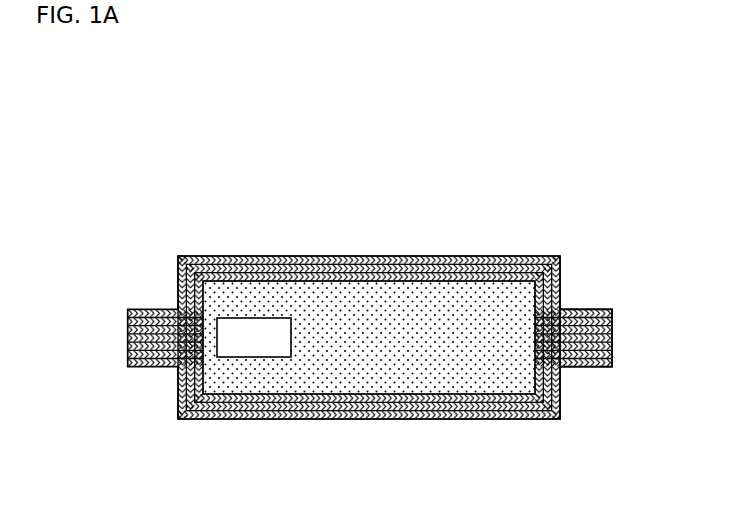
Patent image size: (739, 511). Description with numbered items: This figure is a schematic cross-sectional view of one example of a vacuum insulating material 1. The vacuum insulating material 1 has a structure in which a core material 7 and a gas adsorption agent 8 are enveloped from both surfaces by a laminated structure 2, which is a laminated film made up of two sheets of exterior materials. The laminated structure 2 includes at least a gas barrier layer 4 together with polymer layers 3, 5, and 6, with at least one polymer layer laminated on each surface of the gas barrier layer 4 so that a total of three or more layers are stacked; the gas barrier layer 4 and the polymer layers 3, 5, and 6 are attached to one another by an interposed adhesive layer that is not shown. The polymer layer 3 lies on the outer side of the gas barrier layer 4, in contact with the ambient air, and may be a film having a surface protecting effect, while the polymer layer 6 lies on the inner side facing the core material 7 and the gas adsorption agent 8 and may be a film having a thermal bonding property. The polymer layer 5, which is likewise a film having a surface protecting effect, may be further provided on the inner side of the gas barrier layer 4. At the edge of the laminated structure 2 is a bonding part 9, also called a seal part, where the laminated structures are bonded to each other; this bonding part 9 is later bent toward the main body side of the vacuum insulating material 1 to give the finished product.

The vacuum insulating material 1 is at (187, 182).
The laminated structure 2 is at (397, 204).
The polymer layer 3 is at (467, 257).
The gas barrier layer 4 is at (447, 266).
The polymer layer 5 is at (424, 274).
The polymer layer 6 is at (400, 281).
The core material 7 is at (333, 298).
The gas adsorption agent 8 is at (243, 318).
The bonding part 9 is at (595, 309).